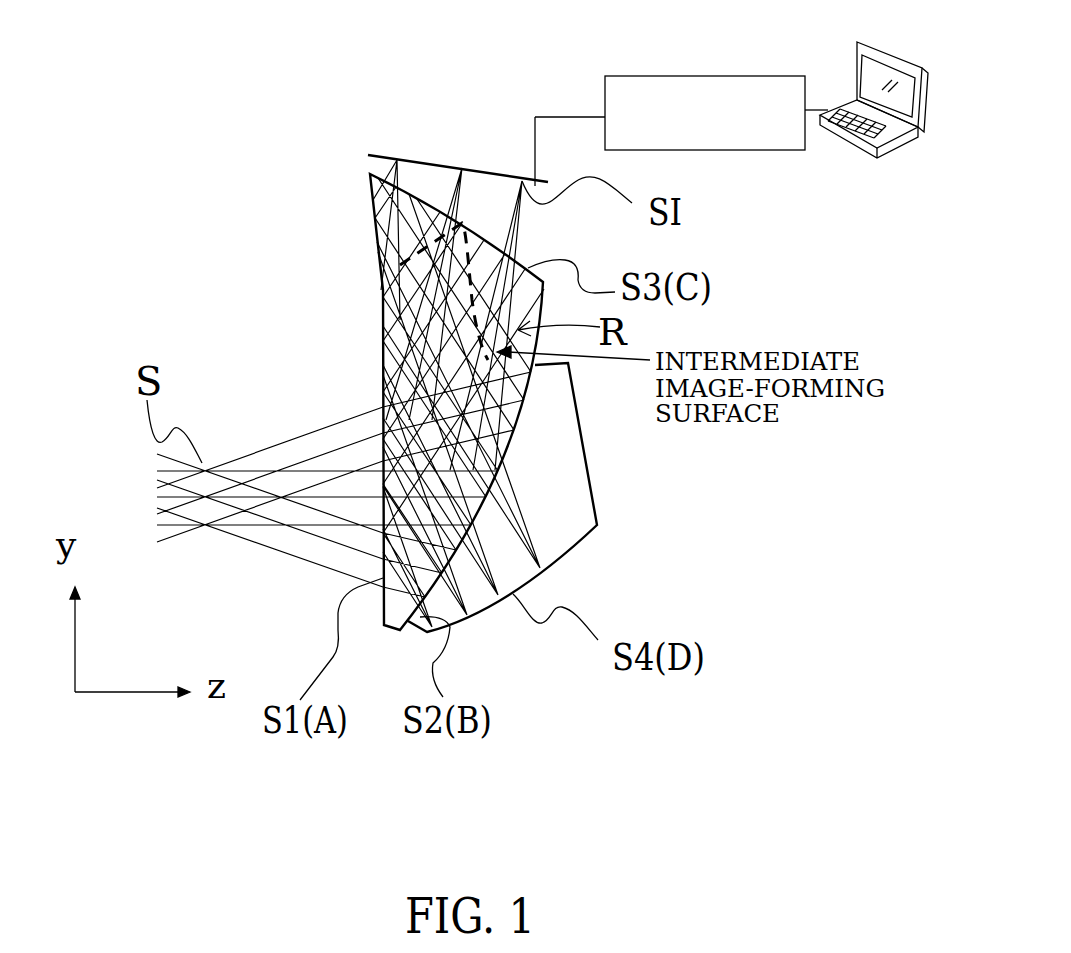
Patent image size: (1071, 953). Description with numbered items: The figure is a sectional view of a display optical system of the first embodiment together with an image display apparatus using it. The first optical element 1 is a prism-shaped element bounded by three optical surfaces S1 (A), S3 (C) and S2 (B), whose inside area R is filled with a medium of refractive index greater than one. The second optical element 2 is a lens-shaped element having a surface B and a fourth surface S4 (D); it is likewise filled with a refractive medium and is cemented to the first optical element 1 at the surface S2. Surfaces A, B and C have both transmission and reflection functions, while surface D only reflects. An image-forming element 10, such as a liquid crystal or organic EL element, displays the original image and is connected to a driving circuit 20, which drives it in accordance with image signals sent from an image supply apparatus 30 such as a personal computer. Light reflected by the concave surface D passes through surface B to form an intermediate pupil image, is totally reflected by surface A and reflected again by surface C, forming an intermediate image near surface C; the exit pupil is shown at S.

The first optical element 1 is at (380, 257).
The second optical element 2 is at (540, 535).
The image-forming element 10 is at (417, 157).
The driving circuit 20 is at (702, 76).
The image supply apparatus 30 is at (858, 143).